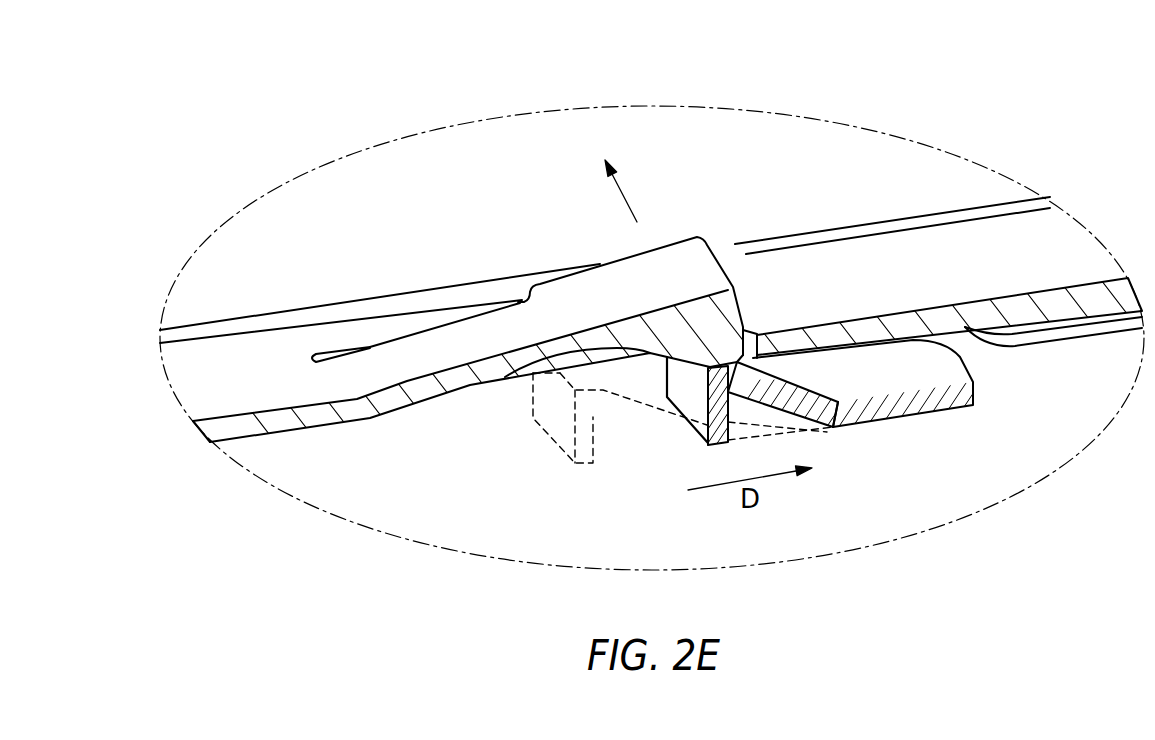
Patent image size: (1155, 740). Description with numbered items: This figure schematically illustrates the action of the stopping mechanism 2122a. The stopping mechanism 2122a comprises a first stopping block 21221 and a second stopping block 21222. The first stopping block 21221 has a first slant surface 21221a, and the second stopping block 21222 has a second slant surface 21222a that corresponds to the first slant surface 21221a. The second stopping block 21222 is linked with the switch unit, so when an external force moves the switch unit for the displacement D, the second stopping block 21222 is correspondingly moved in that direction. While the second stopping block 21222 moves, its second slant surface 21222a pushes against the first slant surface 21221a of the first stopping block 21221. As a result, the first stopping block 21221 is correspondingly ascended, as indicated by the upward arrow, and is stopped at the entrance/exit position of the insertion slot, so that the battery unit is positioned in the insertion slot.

The stopping mechanism 2122a is at (1140, 73).
The first stopping block 21221 is at (612, 285).
The first slant surface 21221a is at (653, 354).
The second stopping block 21222 is at (907, 405).
The second slant surface 21222a is at (770, 375).